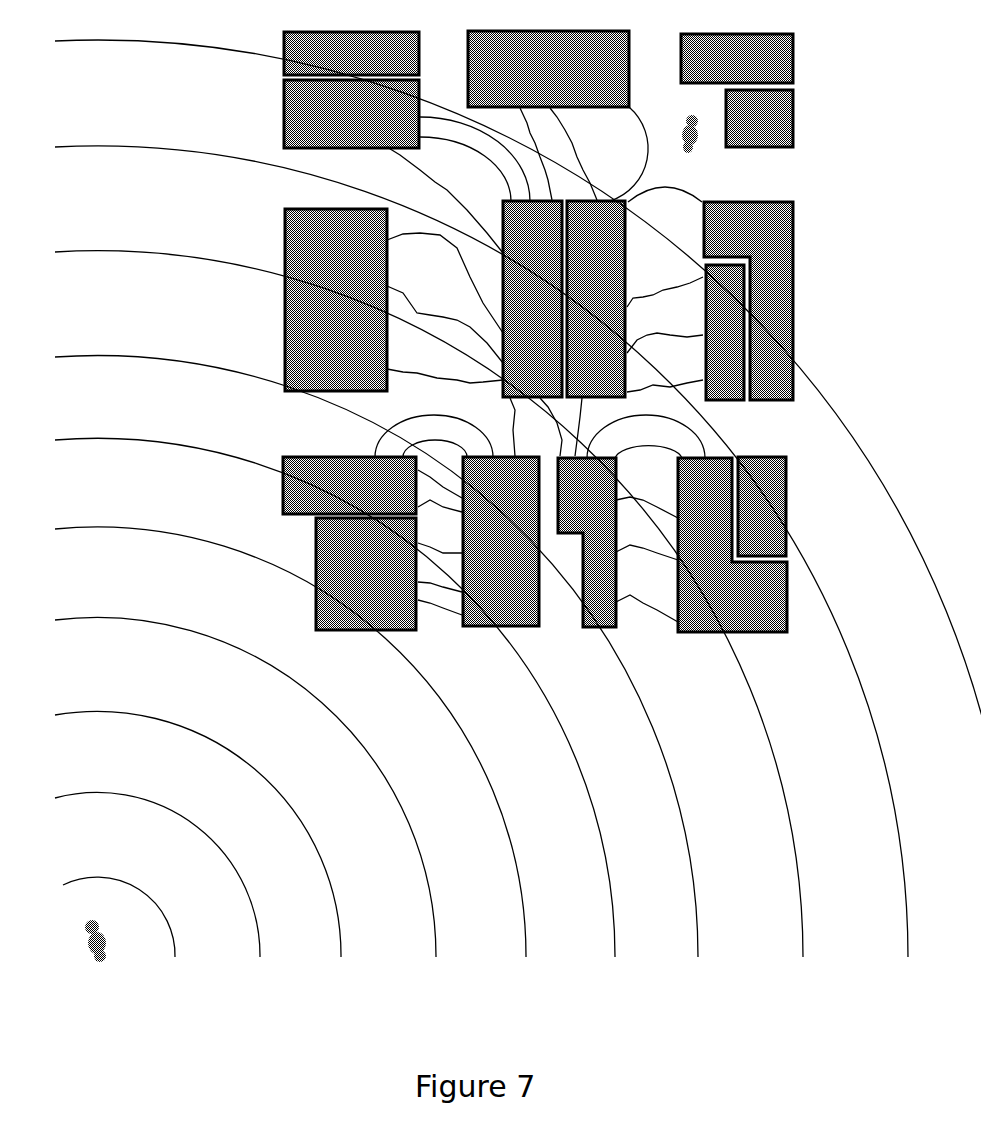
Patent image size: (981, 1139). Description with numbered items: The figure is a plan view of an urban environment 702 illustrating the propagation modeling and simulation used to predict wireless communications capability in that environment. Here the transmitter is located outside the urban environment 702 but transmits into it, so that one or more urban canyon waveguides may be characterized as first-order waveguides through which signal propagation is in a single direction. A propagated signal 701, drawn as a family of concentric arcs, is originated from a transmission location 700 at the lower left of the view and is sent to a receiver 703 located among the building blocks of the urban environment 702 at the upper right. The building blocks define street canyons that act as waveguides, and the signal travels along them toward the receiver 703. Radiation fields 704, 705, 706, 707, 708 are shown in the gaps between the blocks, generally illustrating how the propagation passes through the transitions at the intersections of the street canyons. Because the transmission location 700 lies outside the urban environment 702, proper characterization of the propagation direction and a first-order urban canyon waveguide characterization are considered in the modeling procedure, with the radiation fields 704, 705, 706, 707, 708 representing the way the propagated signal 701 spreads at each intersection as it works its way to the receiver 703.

The transmission location 700 is at (137, 953).
The propagated signal 701 is at (526, 935).
The urban environment 702 is at (832, 355).
The receiver 703 is at (712, 143).
The radiation field 704 is at (457, 469).
The radiation field 705 is at (667, 472).
The radiation field 706 is at (479, 176).
The radiation field 707 is at (641, 154).
The radiation field 708 is at (686, 210).